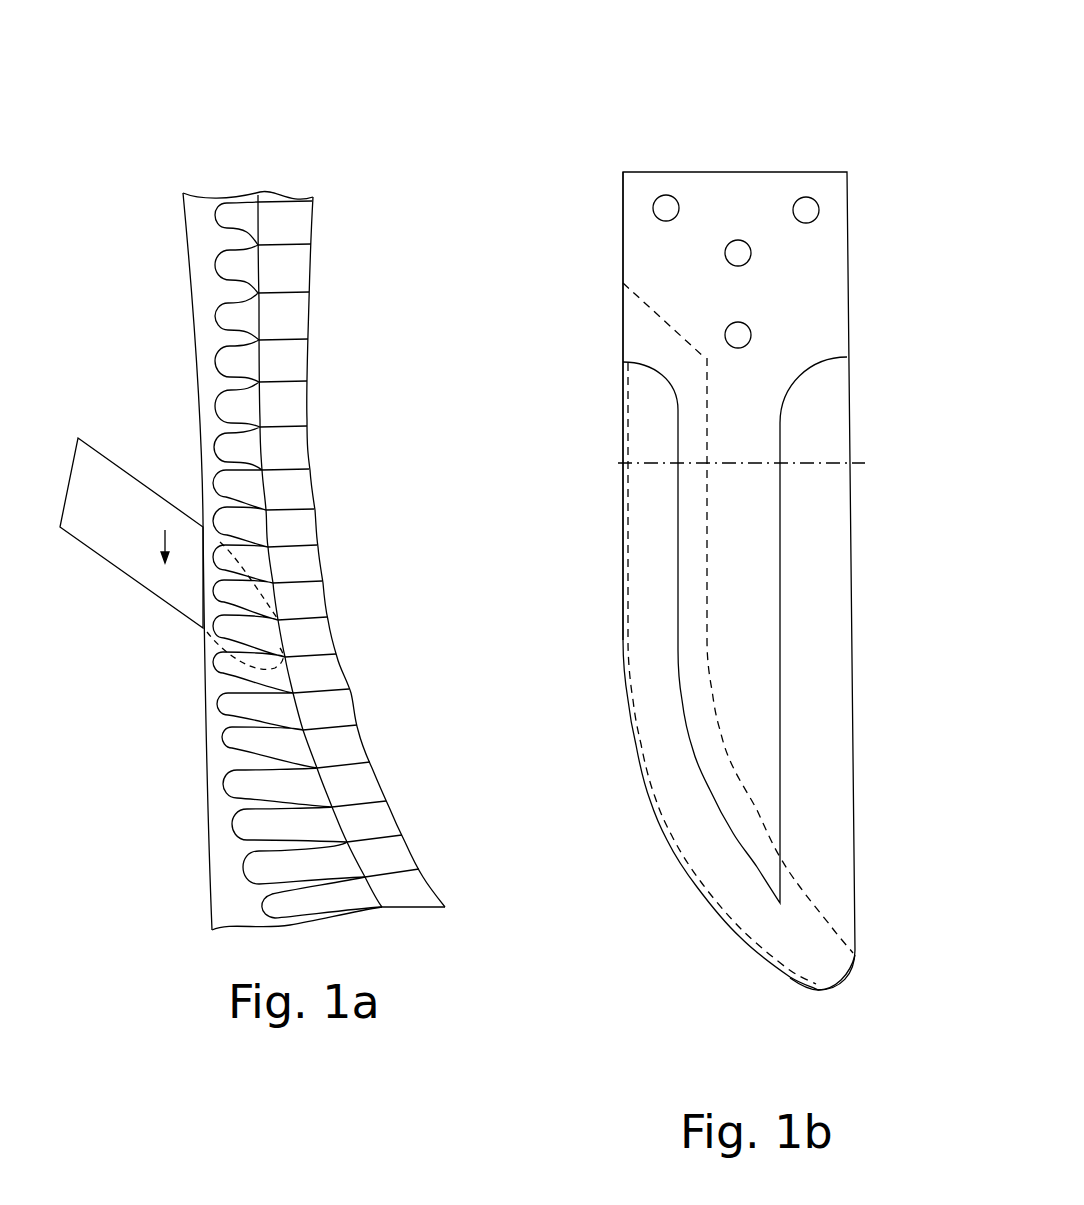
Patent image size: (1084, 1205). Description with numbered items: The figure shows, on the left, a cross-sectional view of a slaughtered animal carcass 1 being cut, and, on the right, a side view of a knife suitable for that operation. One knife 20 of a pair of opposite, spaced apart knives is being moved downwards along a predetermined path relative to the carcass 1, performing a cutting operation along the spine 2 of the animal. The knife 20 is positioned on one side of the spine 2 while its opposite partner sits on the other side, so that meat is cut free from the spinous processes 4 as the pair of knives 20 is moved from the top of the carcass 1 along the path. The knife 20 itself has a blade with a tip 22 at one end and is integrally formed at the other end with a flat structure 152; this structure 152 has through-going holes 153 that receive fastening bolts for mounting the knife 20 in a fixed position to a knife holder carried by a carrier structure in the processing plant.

In FIG. 1A, the slaughtered animal carcass 1 is at (153, 155).
In FIG. 1A, the spine 2 is at (292, 193).
In FIG. 1A, the spinous processes 4 is at (238, 215).
In FIG. 1A, the knife 20 is at (107, 487).
In FIG. 1B, the knife 20 is at (673, 833).
In FIG. 1B, the tip 22 is at (828, 990).
In FIG. 1B, the flat structure 152 is at (817, 265).
In FIG. 1B, the through-going holes 153 is at (666, 208).